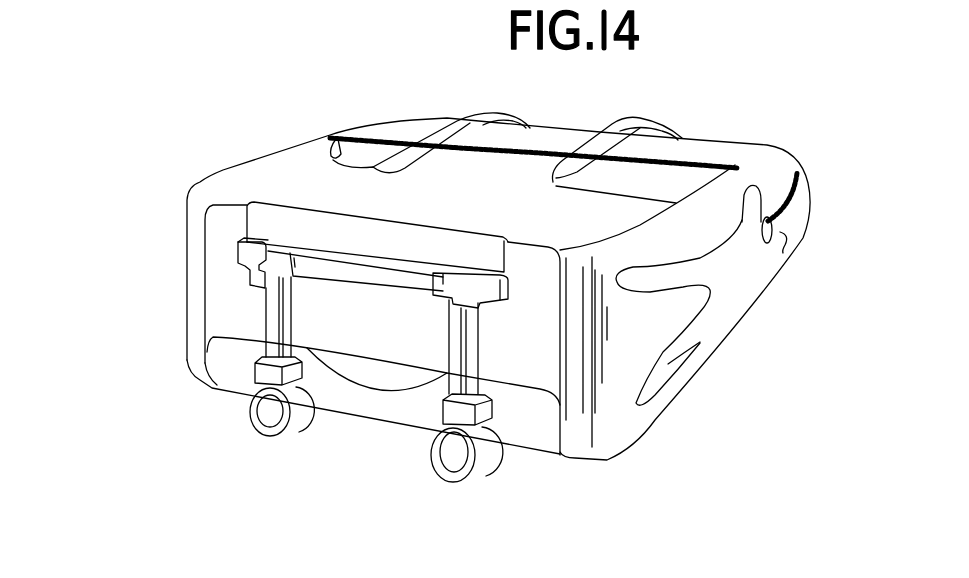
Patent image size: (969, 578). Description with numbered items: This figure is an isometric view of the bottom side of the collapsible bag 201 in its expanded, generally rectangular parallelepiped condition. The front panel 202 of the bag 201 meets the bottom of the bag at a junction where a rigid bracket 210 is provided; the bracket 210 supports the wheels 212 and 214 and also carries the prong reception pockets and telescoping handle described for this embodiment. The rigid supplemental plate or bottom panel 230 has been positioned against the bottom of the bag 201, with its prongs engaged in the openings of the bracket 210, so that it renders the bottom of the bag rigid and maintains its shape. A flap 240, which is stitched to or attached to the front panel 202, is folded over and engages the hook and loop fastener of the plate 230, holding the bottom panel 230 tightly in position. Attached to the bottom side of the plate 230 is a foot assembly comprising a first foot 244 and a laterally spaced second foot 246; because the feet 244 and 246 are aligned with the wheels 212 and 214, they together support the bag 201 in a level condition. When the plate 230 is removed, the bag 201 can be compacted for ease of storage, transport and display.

The collapsible bag 201 is at (711, 134).
The front panel 202 is at (477, 171).
The rigid bracket 210 is at (387, 412).
The wheel 212 is at (270, 438).
The wheel 214 is at (442, 476).
The bottom panel 230 is at (396, 328).
The flap 240 is at (438, 238).
The first foot 244 is at (245, 283).
The second foot 246 is at (462, 305).